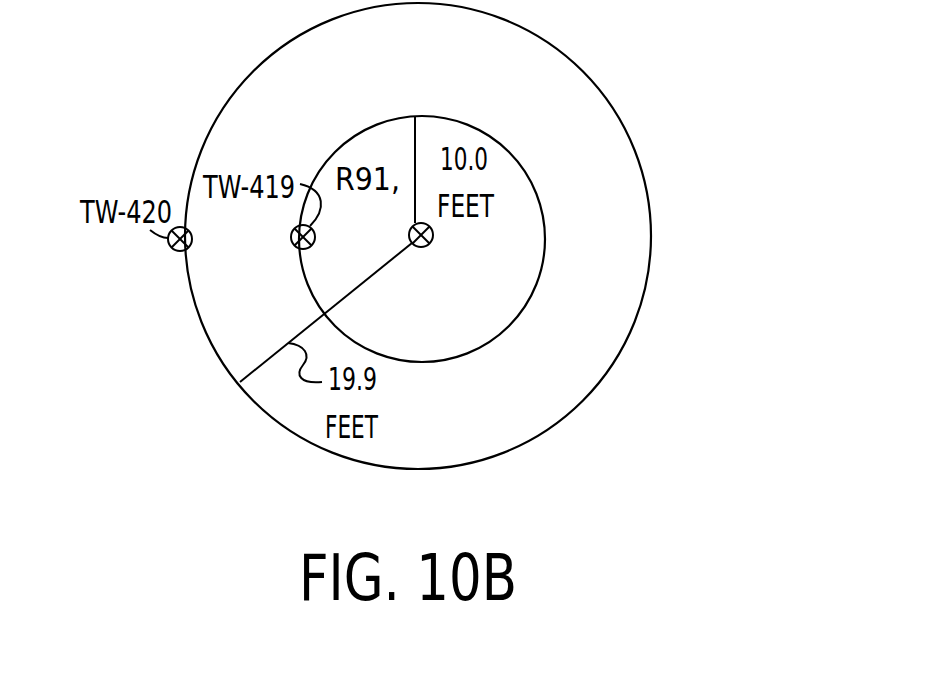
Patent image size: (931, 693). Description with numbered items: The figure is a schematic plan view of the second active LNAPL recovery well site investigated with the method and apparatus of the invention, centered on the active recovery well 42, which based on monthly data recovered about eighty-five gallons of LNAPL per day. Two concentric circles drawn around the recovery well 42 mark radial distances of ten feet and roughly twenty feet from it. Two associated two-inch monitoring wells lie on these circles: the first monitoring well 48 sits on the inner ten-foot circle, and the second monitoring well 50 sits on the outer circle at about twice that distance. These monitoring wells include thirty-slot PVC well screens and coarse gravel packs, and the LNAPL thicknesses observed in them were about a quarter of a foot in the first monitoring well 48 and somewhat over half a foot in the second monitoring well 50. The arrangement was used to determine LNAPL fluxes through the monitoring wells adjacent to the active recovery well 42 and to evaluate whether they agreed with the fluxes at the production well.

The active recovery well R-91 42 is at (412, 225).
The monitoring well TW-419 48 is at (291, 238).
The monitoring well TW-420 50 is at (171, 247).